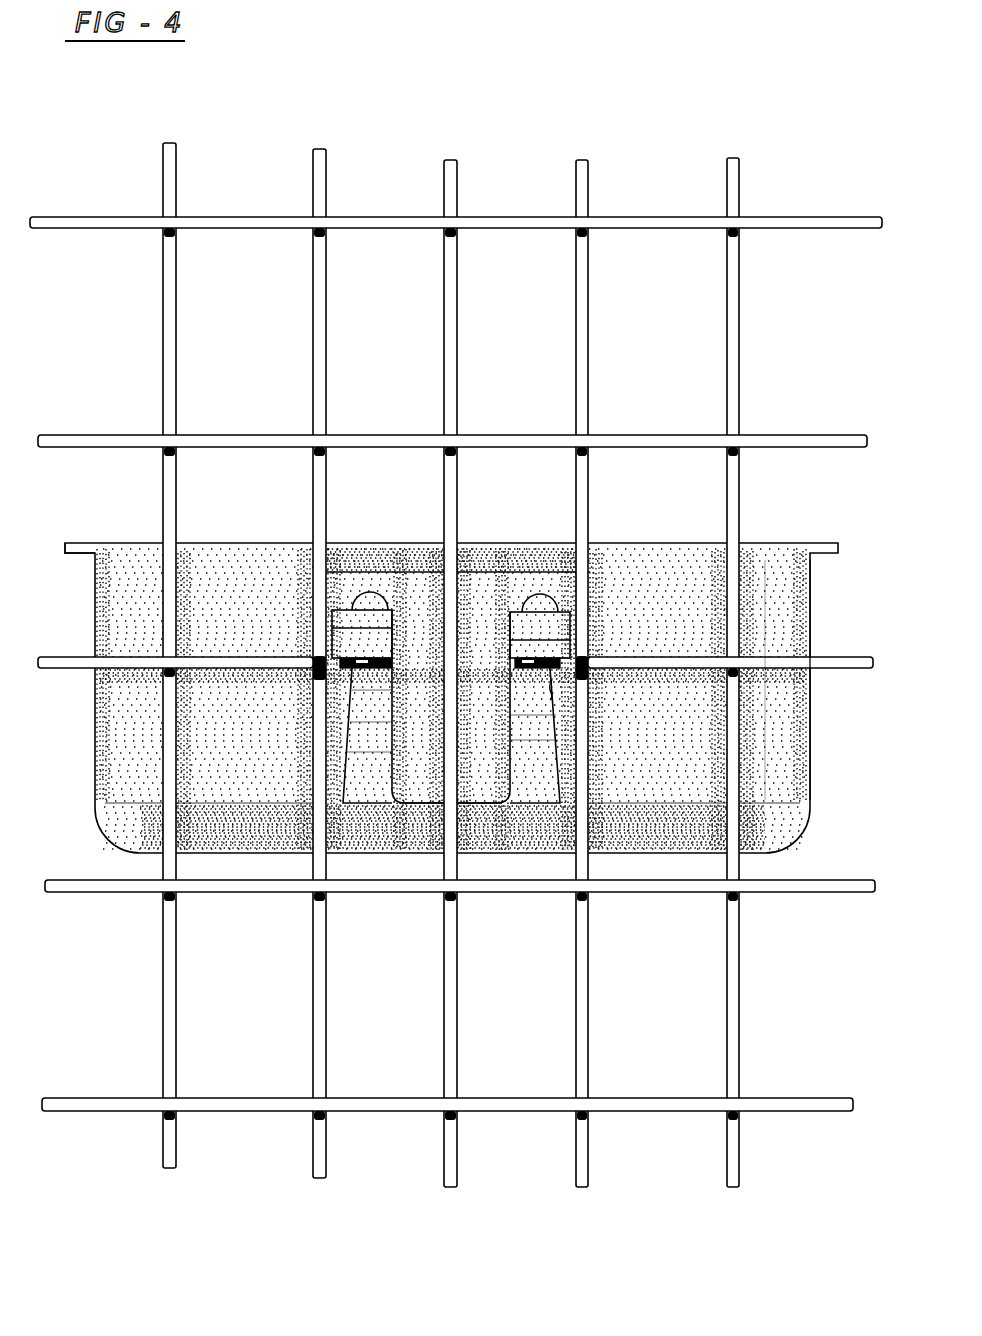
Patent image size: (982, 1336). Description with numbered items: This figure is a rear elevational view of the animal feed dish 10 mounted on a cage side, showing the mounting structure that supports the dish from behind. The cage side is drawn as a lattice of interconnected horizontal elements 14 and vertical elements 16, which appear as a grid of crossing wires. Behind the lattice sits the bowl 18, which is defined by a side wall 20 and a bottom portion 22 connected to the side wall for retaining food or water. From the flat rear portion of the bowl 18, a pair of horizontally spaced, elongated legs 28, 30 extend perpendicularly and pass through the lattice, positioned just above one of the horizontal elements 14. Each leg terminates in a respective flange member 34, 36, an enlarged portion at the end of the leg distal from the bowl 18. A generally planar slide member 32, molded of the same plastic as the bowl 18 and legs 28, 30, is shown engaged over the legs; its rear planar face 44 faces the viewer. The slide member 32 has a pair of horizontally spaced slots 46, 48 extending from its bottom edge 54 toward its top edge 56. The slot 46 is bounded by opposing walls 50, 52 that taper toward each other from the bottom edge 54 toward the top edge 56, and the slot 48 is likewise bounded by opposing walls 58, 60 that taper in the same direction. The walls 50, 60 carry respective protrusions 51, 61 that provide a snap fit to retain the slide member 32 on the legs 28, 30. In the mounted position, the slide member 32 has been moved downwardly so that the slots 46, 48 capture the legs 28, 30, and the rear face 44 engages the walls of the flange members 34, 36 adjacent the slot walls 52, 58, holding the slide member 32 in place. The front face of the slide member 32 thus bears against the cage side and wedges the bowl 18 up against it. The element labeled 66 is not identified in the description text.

The animal feed dish 10 is at (137, 518).
The horizontal elements 14 is at (843, 667).
The vertical elements 16 is at (577, 160).
The bowl 18 is at (812, 607).
The side wall 20 is at (773, 568).
The bottom portion 22 is at (634, 856).
The leg 28 is at (367, 592).
The leg 30 is at (532, 593).
The slide member 32 is at (313, 541).
The flange member 34 is at (347, 645).
The flange member 36 is at (552, 638).
The rear planar face 44 is at (442, 640).
The slot 46 is at (373, 780).
The slot 48 is at (537, 778).
The wall 50 is at (347, 753).
The protrusion 51 is at (367, 693).
The wall 52 is at (390, 722).
The bottom edge 54 is at (473, 806).
The top edge 56 is at (462, 565).
The wall 58 is at (556, 715).
The wall 60 is at (565, 740).
The protrusion 61 is at (528, 690).
The slot 66 is at (582, 562).